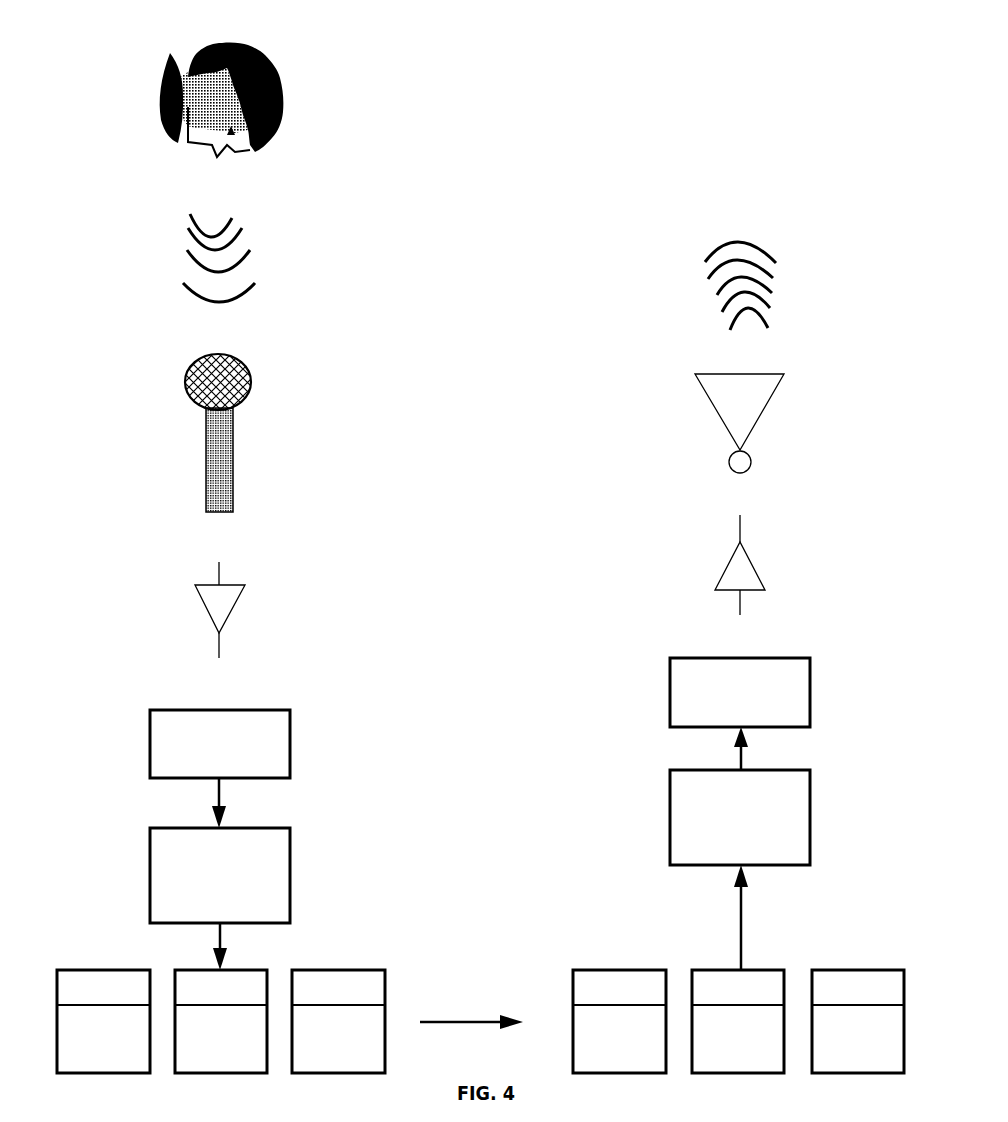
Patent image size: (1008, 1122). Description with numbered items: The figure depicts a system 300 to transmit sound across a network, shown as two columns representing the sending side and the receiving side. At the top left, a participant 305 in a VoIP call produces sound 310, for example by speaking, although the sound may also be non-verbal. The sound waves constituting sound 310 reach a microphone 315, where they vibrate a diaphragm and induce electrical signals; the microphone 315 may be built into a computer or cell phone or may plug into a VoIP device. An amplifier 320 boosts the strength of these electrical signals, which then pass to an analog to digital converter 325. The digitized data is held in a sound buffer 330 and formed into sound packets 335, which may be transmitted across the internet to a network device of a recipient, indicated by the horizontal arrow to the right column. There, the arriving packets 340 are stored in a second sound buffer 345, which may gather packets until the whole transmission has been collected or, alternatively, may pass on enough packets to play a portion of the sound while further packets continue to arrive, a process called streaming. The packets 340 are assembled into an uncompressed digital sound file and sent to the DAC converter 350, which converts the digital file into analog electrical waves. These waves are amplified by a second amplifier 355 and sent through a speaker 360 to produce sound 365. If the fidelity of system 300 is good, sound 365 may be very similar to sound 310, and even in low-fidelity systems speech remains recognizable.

The system 300 is at (757, 72).
The participant 305 is at (275, 68).
The sound 310 is at (240, 232).
The microphone 315 is at (250, 373).
The amplifier 320 is at (245, 585).
The analog to digital converter 325 is at (290, 710).
The sound buffer 330 is at (290, 828).
The sound packets 335 is at (308, 968).
The arriving packets 340 is at (640, 967).
The sound buffer 345 is at (670, 770).
The DAC converter 350 is at (670, 658).
The amplifier 355 is at (735, 552).
The speaker 360 is at (695, 374).
The sound 365 is at (705, 262).